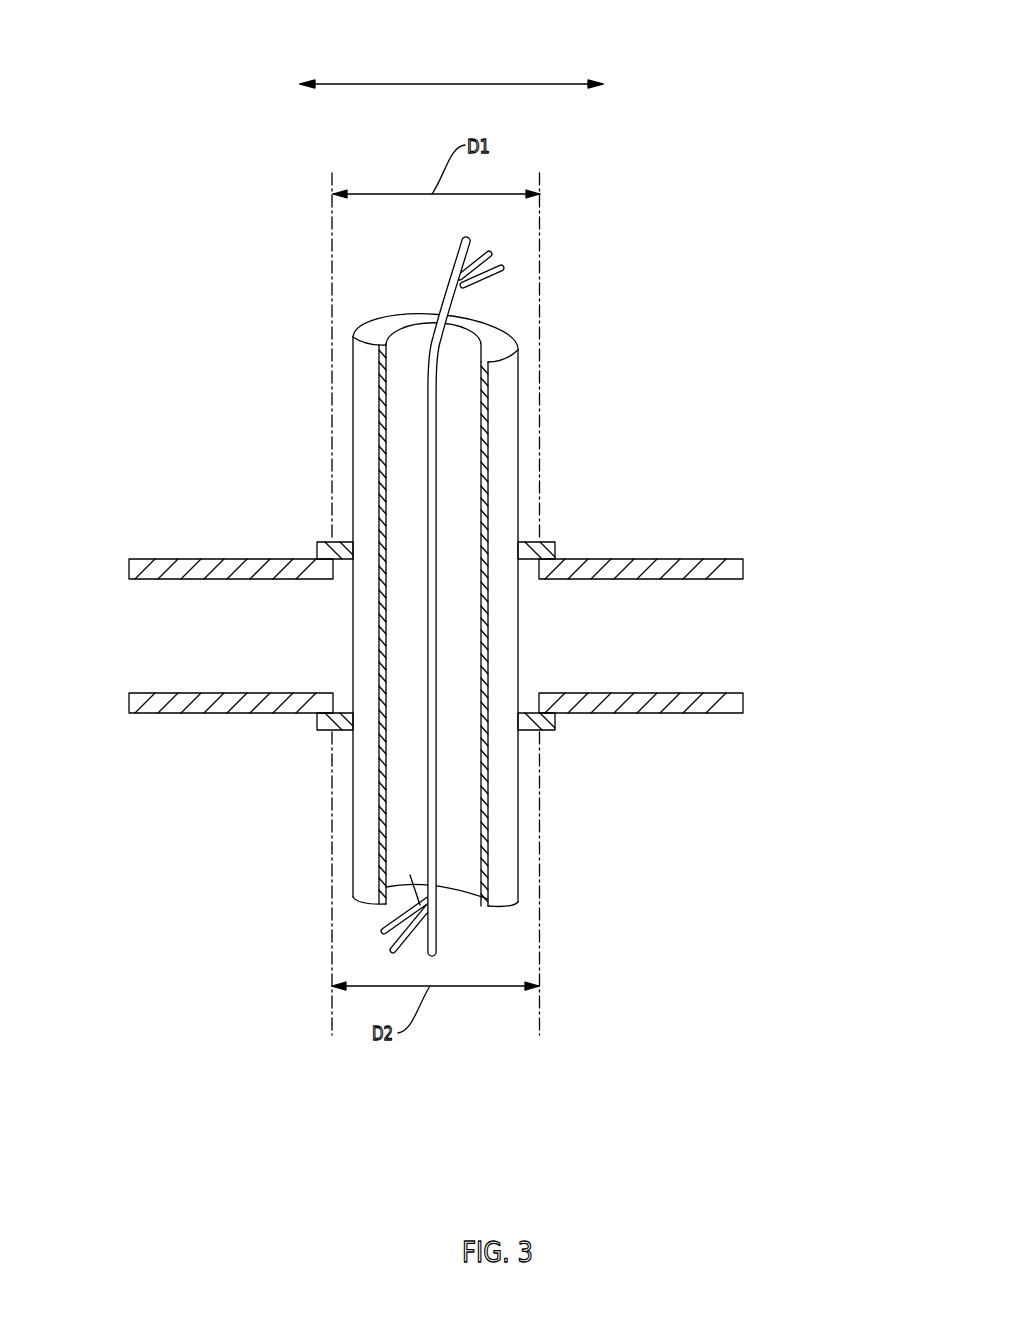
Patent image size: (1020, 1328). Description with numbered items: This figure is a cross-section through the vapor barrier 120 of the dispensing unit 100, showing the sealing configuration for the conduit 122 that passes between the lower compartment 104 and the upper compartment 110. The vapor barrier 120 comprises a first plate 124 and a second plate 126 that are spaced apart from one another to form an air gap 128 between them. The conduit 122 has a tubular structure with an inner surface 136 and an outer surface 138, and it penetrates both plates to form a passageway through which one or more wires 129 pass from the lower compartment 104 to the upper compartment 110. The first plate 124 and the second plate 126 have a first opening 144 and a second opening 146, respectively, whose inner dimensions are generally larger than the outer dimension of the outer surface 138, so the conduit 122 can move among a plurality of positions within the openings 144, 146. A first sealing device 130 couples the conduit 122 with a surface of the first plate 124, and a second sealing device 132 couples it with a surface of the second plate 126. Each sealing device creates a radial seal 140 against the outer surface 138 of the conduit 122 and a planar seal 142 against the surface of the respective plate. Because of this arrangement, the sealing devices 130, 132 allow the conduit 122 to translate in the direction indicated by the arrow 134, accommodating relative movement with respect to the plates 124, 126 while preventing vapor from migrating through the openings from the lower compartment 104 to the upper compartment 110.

The dispensing unit 100 is at (737, 90).
The lower compartment 104 is at (237, 1087).
The upper compartment 110 is at (166, 299).
The vapor barrier 120 is at (678, 637).
The conduit 122 is at (359, 618).
The first plate 124 is at (129, 570).
The second plate 126 is at (129, 700).
The air gap 128 is at (437, 884).
The wires 129 is at (462, 292).
The first sealing device 130 is at (558, 528).
The second sealing device 132 is at (563, 740).
The arrow 134 is at (448, 84).
The inner surface 136 is at (430, 611).
The outer surface 138 is at (363, 820).
The radial seal 140 is at (528, 527).
The planar seal 142 is at (565, 550).
The first opening 144 is at (343, 590).
The second opening 146 is at (343, 684).